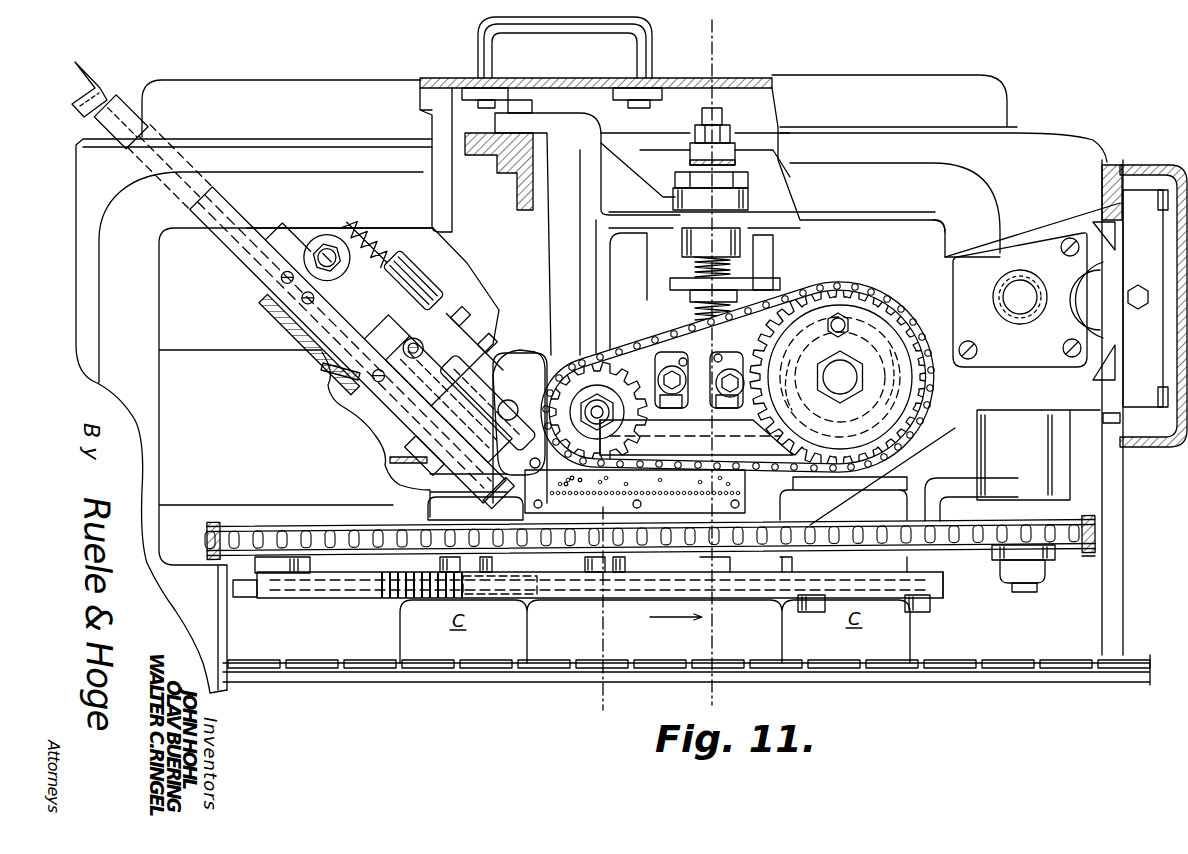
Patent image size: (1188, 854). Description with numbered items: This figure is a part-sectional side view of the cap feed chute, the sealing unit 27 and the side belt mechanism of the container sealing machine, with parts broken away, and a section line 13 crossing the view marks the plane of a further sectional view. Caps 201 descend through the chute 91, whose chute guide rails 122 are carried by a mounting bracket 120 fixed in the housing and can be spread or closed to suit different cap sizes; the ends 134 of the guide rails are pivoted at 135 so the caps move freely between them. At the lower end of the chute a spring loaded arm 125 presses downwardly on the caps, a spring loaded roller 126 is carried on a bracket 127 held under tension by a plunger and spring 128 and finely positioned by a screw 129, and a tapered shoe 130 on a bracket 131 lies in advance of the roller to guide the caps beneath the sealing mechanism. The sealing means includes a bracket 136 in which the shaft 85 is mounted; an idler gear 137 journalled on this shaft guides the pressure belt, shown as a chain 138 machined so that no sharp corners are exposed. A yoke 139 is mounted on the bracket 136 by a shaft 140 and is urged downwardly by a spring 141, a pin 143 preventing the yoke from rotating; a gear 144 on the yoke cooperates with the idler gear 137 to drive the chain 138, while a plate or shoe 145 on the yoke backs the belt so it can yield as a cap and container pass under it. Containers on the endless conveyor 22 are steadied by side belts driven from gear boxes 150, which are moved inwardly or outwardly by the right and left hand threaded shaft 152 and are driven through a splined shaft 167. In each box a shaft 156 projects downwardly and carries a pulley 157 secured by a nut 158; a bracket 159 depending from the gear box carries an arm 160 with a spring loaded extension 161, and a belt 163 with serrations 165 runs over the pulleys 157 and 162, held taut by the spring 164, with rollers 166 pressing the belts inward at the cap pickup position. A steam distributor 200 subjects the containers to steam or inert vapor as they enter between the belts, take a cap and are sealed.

The chute 91 is at (138, 97).
The mounting bracket 120 is at (443, 205).
The chute guide rails 122 is at (247, 260).
The bracket 136 is at (558, 233).
The sealing unit 27 is at (528, 275).
The shaft 140 is at (698, 262).
The pin 143 is at (772, 252).
The gear 144 is at (850, 300).
The gear boxes 150 is at (947, 272).
The shaft 167 is at (1020, 290).
The shaft 152 is at (1142, 286).
The spring 141 is at (700, 300).
The chain 138 is at (664, 340).
The yoke 139 is at (747, 352).
The plunger and spring 128 is at (405, 282).
The bracket 127 is at (437, 335).
The screw 129 is at (493, 347).
The gear 137 is at (568, 388).
The bracket 131 is at (512, 390).
The spring loaded arm 125 is at (487, 392).
The plate or shoe 145 is at (685, 437).
The shaft 85 is at (627, 443).
The pivot 135 is at (378, 417).
The ends of the guide rails 134 is at (437, 463).
The spring loaded roller 126 is at (513, 478).
The tapered shoe 130 is at (570, 478).
The steam distributor 200 is at (738, 493).
The caps 201 is at (817, 490).
The bracket 159 is at (957, 480).
The pulley 157 is at (1085, 512).
The pulley 162 is at (270, 565).
The rollers 166 is at (580, 562).
The belt 163 is at (715, 537).
The serrations or notches 165 is at (847, 540).
The arm 160 is at (932, 583).
The nut 158 is at (1043, 573).
The shaft 156 is at (1030, 592).
The spring loaded extension 161 is at (318, 590).
The spring 164 is at (395, 590).
The endless conveyor 22 is at (732, 663).
The section line 13 is at (690, 43).